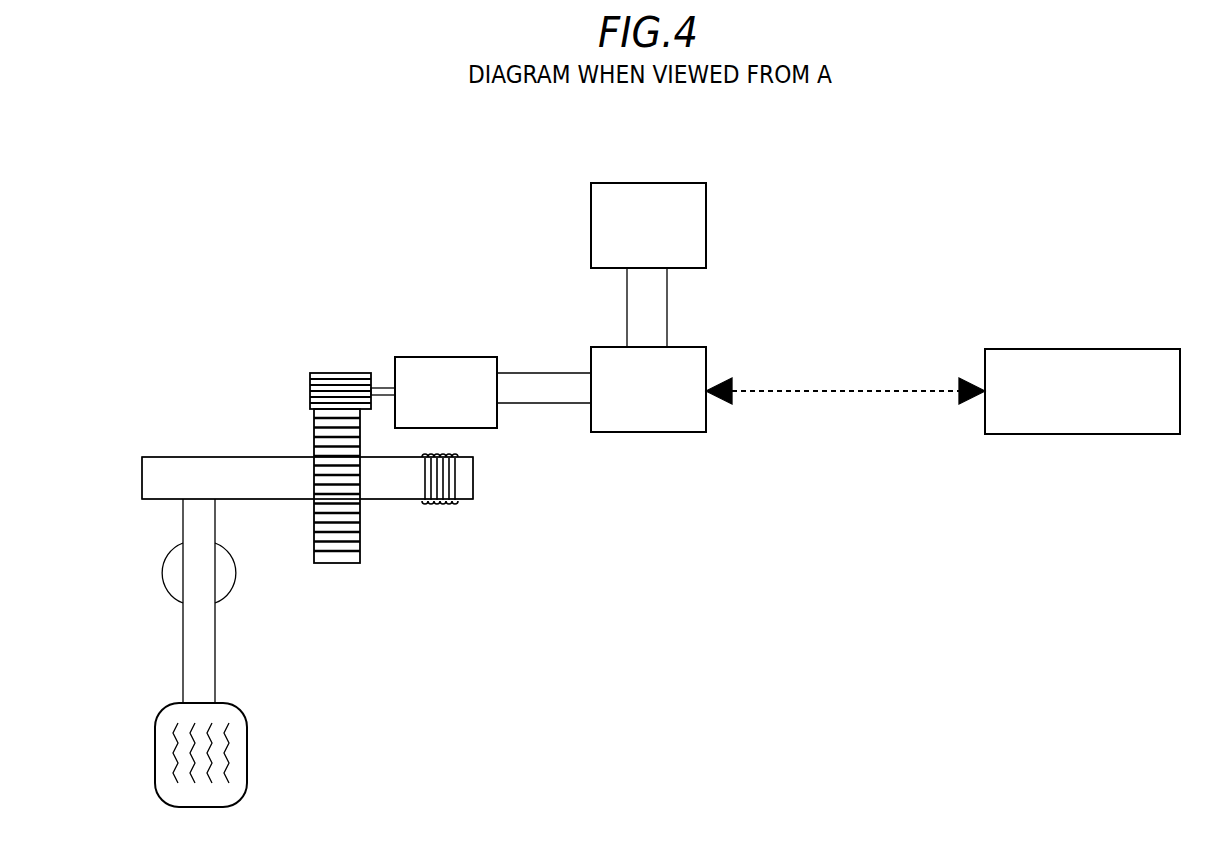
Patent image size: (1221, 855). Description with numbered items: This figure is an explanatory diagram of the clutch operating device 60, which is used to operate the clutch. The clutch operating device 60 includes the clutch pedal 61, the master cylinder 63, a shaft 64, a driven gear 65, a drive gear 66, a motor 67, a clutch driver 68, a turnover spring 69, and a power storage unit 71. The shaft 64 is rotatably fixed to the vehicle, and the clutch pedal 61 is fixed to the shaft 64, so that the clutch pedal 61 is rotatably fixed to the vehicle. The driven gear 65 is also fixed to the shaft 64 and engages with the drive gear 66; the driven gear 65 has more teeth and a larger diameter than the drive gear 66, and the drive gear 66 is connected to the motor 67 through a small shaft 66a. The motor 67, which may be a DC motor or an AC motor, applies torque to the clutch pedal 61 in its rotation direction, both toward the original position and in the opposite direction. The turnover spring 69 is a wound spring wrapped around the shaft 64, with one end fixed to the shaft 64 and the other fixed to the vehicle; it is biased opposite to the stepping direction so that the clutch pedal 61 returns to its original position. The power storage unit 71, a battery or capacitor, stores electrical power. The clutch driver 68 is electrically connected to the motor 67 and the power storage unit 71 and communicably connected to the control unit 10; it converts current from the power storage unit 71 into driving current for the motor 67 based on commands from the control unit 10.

The control unit 10 is at (1085, 349).
The clutch operating device 60 is at (313, 200).
The clutch pedal 61 is at (155, 750).
The master cylinder 63 is at (167, 572).
The shaft 64 is at (250, 457).
The driven gear 65 is at (360, 545).
The drive gear 66 is at (334, 373).
The gear shaft 66a is at (380, 388).
The motor 67 is at (447, 345).
The clutch driver 68 is at (686, 347).
The turnover spring 69 is at (443, 505).
The power storage unit 71 is at (706, 225).